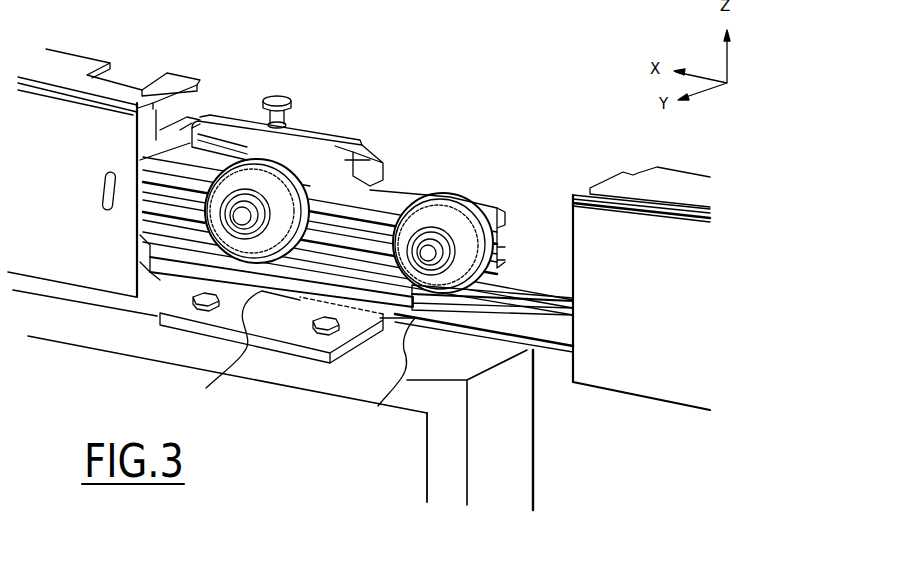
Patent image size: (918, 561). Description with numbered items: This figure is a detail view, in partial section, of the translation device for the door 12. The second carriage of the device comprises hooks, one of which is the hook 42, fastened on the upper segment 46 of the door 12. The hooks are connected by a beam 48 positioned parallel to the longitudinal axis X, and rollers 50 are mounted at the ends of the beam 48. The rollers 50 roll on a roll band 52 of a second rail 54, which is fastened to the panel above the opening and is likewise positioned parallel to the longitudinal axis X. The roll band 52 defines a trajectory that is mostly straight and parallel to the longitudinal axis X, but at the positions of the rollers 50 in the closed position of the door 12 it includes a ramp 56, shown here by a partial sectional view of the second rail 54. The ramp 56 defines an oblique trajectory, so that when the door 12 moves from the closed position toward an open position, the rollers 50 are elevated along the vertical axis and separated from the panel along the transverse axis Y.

The door 12 is at (512, 460).
The hook 42 is at (350, 155).
The upper segment 46 is at (472, 348).
The beam 48 is at (380, 200).
The rollers 50 is at (292, 160).
The roll band 52 is at (446, 318).
The second rail 54 is at (678, 183).
The ramp 56 is at (236, 364).